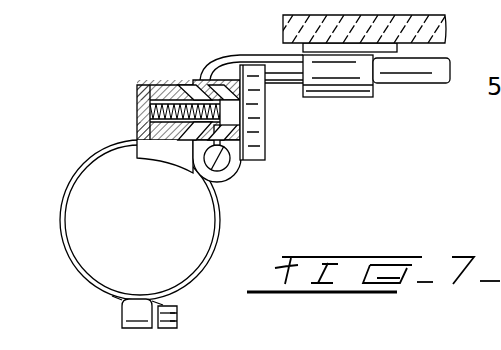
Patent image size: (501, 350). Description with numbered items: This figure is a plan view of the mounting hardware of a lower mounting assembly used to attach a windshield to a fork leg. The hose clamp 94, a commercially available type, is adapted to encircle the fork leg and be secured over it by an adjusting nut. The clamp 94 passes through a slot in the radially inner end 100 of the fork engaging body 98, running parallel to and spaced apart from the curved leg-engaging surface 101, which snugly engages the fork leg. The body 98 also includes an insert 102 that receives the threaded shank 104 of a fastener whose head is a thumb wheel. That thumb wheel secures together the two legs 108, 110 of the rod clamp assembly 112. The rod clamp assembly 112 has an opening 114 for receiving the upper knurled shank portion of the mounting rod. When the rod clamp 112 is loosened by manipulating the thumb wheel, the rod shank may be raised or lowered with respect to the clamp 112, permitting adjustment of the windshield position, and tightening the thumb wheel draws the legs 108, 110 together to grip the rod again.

The hose clamp 94 is at (224, 238).
The fork engaging body 98 is at (157, 74).
The radially inner end 100 is at (170, 112).
The leg-engaging surface 101 is at (153, 163).
The insert 102 is at (167, 85).
The threaded shank 104 is at (140, 98).
The leg of rod clamp assembly 108 is at (195, 82).
The leg of rod clamp assembly 110 is at (226, 80).
The rod clamp assembly 112 is at (243, 166).
The opening 114 is at (215, 172).